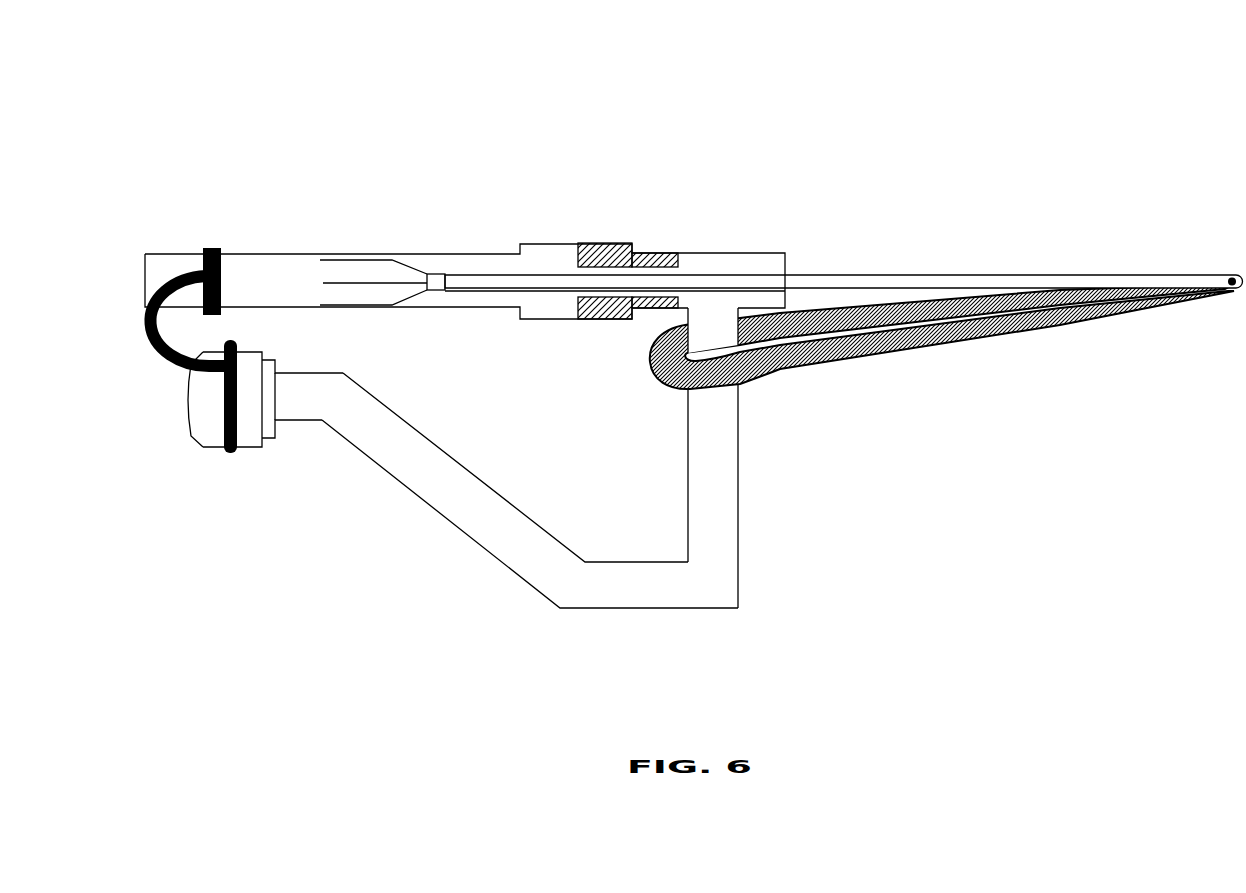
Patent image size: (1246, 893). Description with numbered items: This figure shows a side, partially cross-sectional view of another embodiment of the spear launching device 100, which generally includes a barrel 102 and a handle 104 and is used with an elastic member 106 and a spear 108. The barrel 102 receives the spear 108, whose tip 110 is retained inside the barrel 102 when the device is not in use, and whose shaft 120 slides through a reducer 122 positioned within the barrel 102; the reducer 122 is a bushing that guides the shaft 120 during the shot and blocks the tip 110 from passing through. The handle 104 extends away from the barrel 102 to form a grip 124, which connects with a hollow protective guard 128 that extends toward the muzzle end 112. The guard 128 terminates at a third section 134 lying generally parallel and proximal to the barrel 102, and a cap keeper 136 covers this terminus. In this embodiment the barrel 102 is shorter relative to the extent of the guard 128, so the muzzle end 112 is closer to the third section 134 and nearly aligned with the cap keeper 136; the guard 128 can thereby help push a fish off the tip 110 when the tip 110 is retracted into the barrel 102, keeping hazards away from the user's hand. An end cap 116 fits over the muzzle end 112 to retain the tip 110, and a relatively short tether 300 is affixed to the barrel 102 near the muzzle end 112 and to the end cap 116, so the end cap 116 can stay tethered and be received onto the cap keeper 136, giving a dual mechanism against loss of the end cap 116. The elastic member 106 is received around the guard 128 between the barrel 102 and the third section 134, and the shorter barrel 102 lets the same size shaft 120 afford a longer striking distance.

The spear launching device 100 is at (287, 98).
The barrel 102 is at (315, 252).
The handle 104 is at (864, 609).
The elastic member 106 is at (938, 344).
The spear 108 is at (902, 278).
The tip 110 is at (402, 252).
The muzzle end 112 is at (143, 252).
The end cap 116 is at (202, 413).
The shaft 120 is at (532, 282).
The reducer 122 is at (605, 247).
The grip 124 is at (718, 470).
The protective guard 128 is at (463, 513).
The third section 134 is at (302, 380).
The cap keeper 136 is at (272, 438).
The tether 300 is at (150, 342).